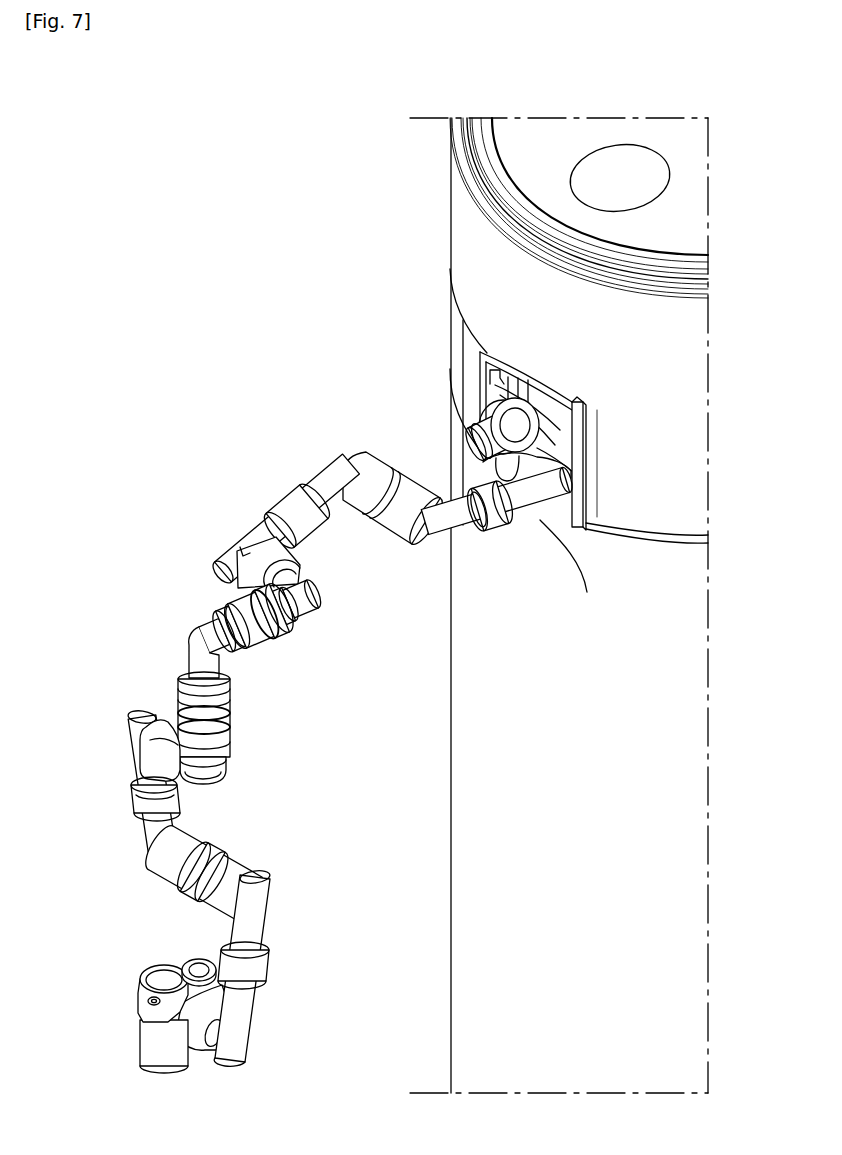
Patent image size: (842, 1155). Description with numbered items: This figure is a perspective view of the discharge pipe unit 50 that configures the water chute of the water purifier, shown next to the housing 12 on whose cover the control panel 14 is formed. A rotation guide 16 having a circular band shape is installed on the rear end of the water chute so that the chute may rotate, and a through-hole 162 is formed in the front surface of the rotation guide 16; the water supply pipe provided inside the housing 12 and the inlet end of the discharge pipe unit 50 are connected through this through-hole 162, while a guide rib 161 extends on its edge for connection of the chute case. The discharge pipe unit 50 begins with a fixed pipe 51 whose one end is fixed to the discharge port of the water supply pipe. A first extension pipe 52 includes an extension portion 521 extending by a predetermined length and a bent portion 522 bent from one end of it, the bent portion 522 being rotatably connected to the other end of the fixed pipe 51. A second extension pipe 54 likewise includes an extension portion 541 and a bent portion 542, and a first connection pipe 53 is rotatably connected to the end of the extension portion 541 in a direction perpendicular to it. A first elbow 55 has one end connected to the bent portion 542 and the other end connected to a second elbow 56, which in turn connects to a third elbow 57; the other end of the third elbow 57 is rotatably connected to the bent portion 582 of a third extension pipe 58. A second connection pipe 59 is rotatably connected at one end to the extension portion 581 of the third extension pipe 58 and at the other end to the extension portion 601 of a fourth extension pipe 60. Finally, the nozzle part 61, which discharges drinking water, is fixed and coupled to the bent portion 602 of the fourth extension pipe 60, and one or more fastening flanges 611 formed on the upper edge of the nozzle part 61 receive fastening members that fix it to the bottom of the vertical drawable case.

The housing 12 is at (693, 745).
The control panel 14 is at (557, 138).
The rotation guide 16 is at (693, 485).
The guide rib 161 is at (580, 432).
The through-hole 162 is at (497, 378).
The discharge pipe unit 50 is at (139, 537).
The fixed pipe 51 is at (505, 410).
The first extension pipe 52 is at (515, 568).
The extension portion 521 is at (470, 520).
The bent portion 522 is at (530, 490).
The first connection pipe 53 is at (395, 520).
The second extension pipe 54 is at (277, 496).
The extension portion 541 is at (275, 521).
The bent portion 542 is at (248, 556).
The first elbow 55 is at (285, 617).
The second elbow 56 is at (224, 704).
The third elbow 57 is at (218, 752).
The third extension pipe 58 is at (106, 780).
The extension portion 581 is at (120, 799).
The bent portion 582 is at (153, 742).
The second connection pipe 59 is at (170, 868).
The fourth extension pipe 60 is at (272, 967).
The extension portion 601 is at (275, 965).
The bent portion 602 is at (200, 1017).
The nozzle part 61 is at (153, 1042).
The fastening flange 611 is at (197, 959).